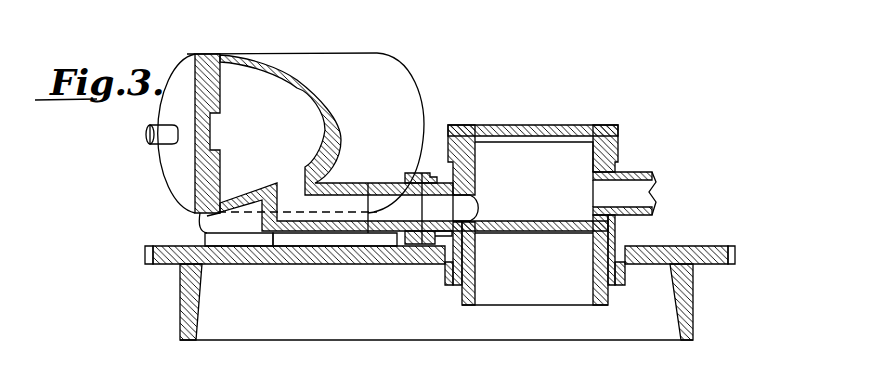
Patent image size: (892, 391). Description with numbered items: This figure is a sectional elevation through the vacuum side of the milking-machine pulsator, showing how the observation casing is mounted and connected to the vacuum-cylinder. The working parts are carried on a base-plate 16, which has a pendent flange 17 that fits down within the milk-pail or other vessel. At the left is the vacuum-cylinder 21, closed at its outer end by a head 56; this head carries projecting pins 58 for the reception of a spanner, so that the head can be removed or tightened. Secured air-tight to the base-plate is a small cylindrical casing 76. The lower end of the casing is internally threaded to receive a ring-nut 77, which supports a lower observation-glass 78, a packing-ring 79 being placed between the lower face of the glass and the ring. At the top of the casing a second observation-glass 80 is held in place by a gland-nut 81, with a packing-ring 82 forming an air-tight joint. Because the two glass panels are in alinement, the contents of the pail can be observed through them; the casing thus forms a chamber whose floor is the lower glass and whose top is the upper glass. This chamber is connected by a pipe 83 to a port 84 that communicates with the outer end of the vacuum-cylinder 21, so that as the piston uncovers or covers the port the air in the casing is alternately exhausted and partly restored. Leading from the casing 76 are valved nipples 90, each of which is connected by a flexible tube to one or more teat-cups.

The base-plate 16 is at (677, 246).
The pendent flange 17 is at (240, 335).
The vacuum-cylinder 21 is at (298, 60).
The head 56 is at (173, 174).
The projecting pins 58 is at (152, 136).
The cylindrical casing 76 is at (615, 238).
The ring-nut 77 is at (610, 305).
The observation-glass 78 is at (558, 228).
The packing-ring 79 is at (596, 232).
The observation-glass 80 is at (528, 133).
The gland-nut 81 is at (610, 128).
The packing-ring 82 is at (590, 141).
The pipe 83 is at (397, 213).
The port 84 is at (292, 183).
The nipples 90 is at (643, 181).